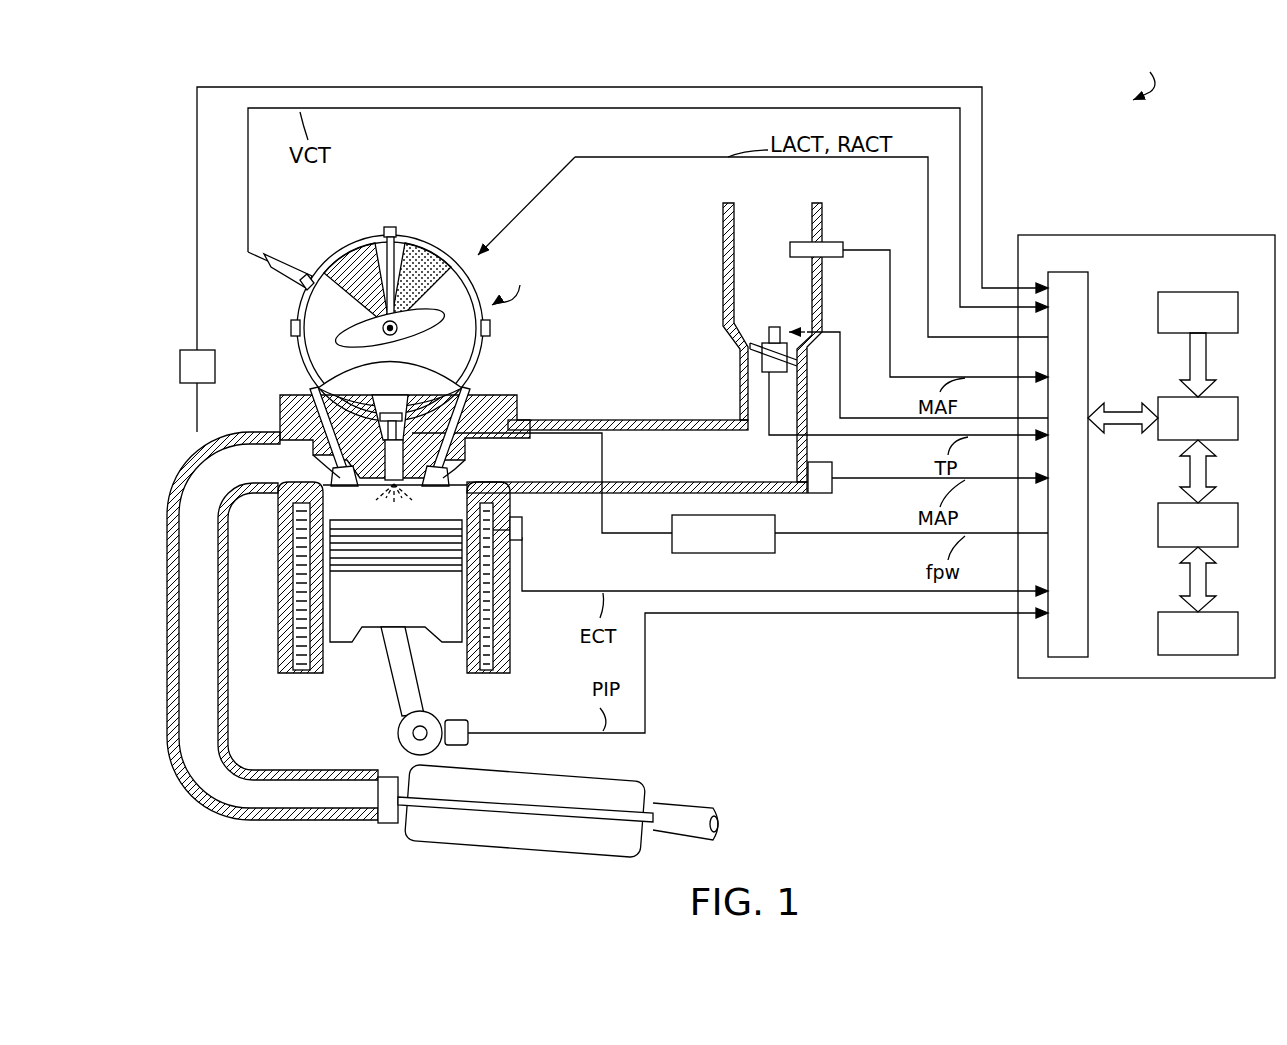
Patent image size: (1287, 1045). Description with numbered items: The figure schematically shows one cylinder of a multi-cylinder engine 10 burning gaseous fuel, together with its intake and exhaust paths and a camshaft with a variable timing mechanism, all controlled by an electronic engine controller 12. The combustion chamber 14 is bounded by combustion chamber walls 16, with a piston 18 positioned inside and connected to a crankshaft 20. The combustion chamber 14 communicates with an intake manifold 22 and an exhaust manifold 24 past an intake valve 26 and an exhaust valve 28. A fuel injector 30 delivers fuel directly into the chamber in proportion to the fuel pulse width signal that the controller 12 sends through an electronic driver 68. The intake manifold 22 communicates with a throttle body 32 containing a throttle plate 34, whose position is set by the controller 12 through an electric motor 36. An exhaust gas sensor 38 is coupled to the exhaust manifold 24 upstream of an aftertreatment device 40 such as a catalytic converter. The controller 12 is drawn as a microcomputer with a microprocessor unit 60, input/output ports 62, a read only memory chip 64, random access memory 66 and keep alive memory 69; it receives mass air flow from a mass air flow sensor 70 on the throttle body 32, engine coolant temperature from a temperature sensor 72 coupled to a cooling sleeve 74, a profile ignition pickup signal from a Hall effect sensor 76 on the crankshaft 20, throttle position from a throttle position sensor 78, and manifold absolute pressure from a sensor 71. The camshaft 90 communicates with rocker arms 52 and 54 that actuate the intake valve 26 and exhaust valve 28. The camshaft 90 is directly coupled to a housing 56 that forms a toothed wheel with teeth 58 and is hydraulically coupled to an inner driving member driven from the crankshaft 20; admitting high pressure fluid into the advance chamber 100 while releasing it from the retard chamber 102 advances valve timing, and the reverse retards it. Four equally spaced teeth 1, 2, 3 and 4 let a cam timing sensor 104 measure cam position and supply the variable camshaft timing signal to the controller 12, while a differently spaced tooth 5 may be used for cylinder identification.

The tooth 1 is at (383, 236).
The tooth 2 is at (493, 318).
The tooth 3 is at (407, 412).
The tooth 4 is at (291, 328).
The tooth 5 is at (300, 290).
The engine 10 is at (1151, 72).
The electronic engine controller 12 is at (1215, 233).
The combustion chamber 14 is at (350, 520).
The combustion chamber walls 16 is at (322, 675).
The piston 18 is at (383, 612).
The crankshaft 20 is at (405, 738).
The intake manifold 22 is at (637, 456).
The exhaust manifold 24 is at (185, 548).
The intake valve 26 is at (452, 470).
The exhaust valve 28 is at (340, 475).
The fuel injector 30 is at (385, 418).
The throttle body 32 is at (760, 397).
The throttle plate 34 is at (762, 343).
The electric motor 36 is at (778, 322).
The exhaust gas sensor 38 is at (191, 349).
The aftertreatment device 40 is at (580, 772).
The rocker arm 52 is at (318, 392).
The rocker arm 54 is at (462, 390).
The housing 56 is at (300, 350).
The teeth 58 is at (513, 282).
The microprocessor unit 60 is at (1233, 396).
The input/output ports 62 is at (1088, 296).
The read only memory chip 64 is at (726, 255).
The random access memory 66 is at (1232, 502).
The electronic driver 68 is at (778, 530).
The keep alive memory 69 is at (1231, 610).
The mass air flow sensor 70 is at (817, 243).
The sensor 71 is at (836, 475).
The temperature sensor 72 is at (528, 526).
The cooling sleeve 74 is at (508, 637).
The Hall effect sensor 76 is at (475, 728).
The throttle position sensor 78 is at (760, 362).
The camshaft 90 is at (360, 330).
The advance chamber 100 is at (357, 262).
The retard chamber 102 is at (430, 266).
The cam timing sensor 104 is at (278, 280).